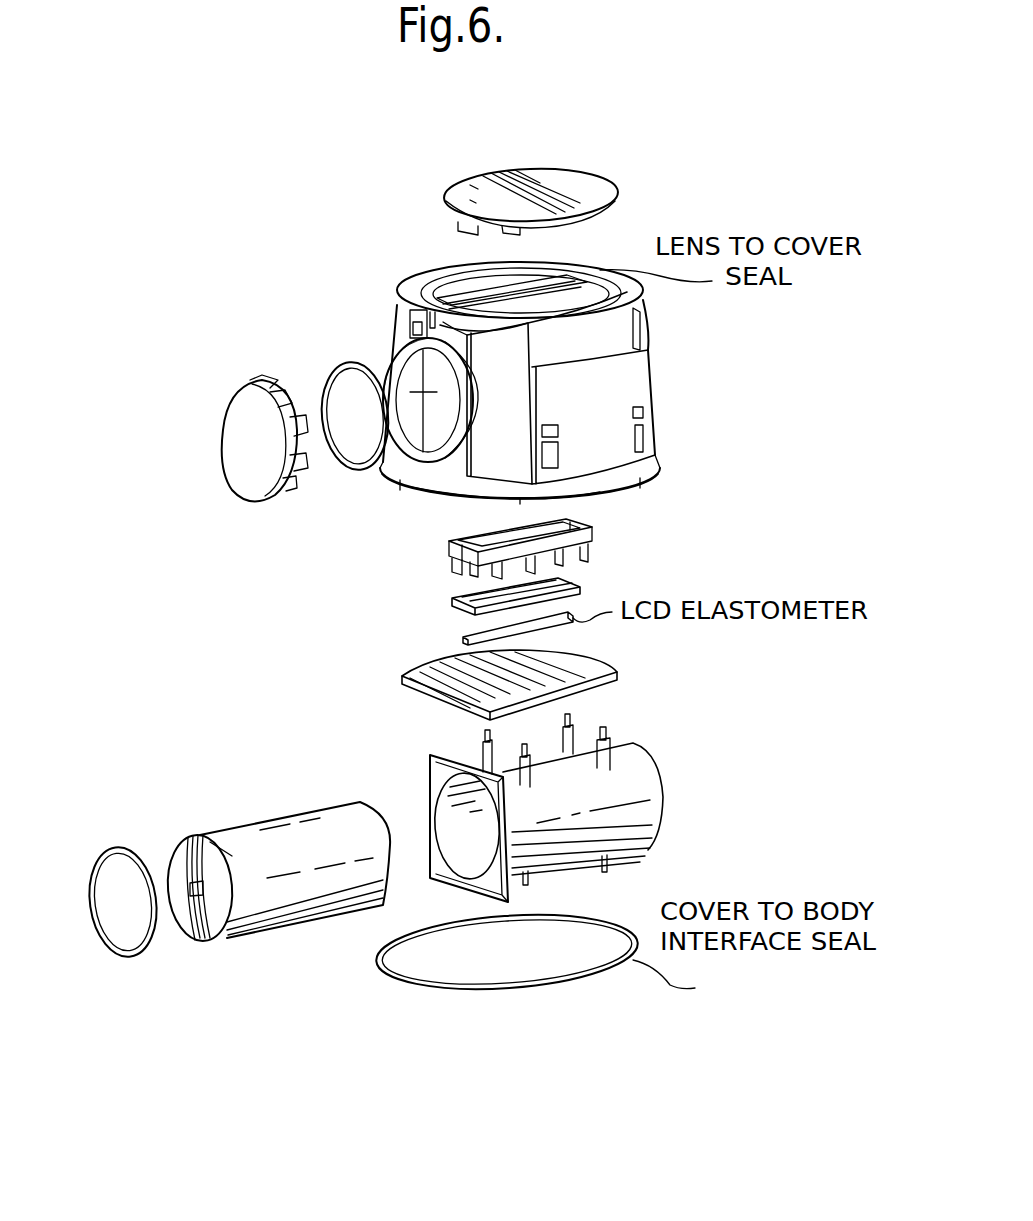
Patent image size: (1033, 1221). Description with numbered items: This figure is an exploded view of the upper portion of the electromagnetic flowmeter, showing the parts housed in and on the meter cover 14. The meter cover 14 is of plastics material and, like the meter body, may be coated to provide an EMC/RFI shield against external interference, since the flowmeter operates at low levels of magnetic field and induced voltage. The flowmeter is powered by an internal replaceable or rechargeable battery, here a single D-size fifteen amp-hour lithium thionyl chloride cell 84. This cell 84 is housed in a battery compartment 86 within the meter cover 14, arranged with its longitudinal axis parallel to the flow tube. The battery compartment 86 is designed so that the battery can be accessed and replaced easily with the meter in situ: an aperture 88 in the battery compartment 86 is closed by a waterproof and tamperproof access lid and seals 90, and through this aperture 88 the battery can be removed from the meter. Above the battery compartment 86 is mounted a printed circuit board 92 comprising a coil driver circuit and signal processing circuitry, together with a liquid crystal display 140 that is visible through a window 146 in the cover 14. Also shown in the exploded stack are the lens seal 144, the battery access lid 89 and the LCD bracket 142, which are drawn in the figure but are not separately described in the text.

The window 146 is at (677, 182).
The lens to cover seal channel 144 is at (553, 288).
The meter cover 14 is at (622, 390).
The aperture 88 is at (392, 372).
The battery access lid 89 is at (230, 404).
The access lid and seals 90 is at (106, 850).
The LCD bracket 142 is at (568, 548).
The liquid crystal display 140 is at (470, 583).
The printed circuit board 92 is at (447, 660).
The battery compartment 86 is at (620, 788).
The cell 84 is at (273, 900).